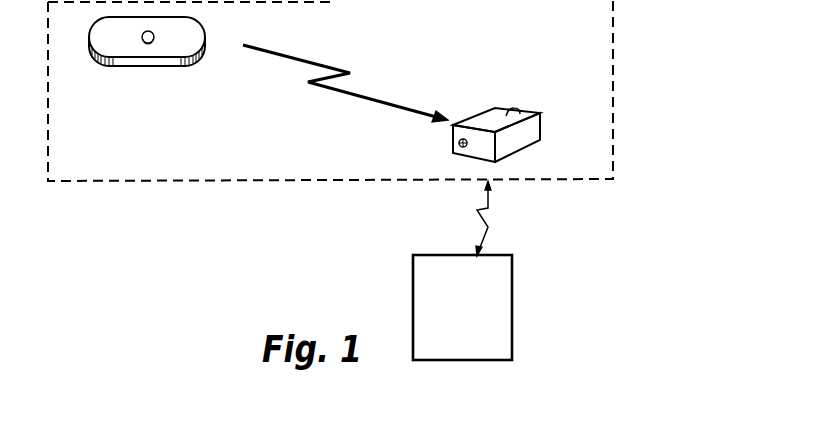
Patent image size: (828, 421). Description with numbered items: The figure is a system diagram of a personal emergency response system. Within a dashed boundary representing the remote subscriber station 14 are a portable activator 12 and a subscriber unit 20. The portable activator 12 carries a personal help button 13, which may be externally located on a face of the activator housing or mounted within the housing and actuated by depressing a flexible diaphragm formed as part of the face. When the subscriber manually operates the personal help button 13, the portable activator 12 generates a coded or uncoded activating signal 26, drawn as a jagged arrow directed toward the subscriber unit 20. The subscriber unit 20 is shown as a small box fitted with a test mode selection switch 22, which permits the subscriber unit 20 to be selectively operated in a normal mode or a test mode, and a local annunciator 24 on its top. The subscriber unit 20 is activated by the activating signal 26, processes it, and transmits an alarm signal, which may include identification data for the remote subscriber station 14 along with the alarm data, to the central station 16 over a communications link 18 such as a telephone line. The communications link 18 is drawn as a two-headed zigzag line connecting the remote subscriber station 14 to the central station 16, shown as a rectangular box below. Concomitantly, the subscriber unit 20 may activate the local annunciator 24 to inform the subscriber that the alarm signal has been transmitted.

The portable activator 12 is at (149, 61).
The personal help button 13 is at (141, 37).
The remote subscriber station 14 is at (242, 181).
The central station 16 is at (513, 287).
The communications link 18 is at (490, 210).
The subscriber unit 20 is at (485, 122).
The test mode selection switch 22 is at (458, 143).
The local annunciator 24 is at (515, 110).
The activating signal 26 is at (313, 61).